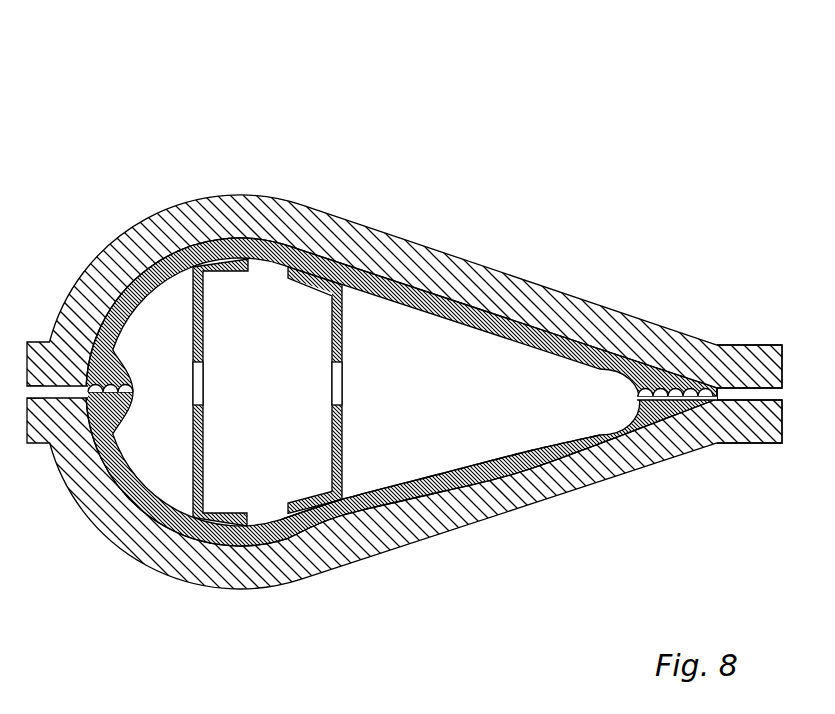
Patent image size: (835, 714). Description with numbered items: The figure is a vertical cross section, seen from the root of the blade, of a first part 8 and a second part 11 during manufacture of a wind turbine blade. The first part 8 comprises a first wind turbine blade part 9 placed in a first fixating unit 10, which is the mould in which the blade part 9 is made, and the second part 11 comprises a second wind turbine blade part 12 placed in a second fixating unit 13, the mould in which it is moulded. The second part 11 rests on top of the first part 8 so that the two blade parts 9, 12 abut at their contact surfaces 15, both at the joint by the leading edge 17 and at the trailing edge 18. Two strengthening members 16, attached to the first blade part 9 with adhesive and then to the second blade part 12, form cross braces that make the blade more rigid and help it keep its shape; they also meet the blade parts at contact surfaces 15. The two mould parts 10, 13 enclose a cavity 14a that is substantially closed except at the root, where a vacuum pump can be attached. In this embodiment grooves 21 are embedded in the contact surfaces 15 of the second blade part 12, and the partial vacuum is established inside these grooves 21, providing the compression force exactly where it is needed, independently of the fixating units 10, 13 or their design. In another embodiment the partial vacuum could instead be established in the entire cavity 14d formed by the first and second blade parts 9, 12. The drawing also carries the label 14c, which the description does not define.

The first part 8 is at (168, 606).
The first wind turbine blade part 9 is at (245, 538).
The first fixating unit 10 is at (337, 498).
The second part 11 is at (168, 172).
The second wind turbine blade part 12 is at (297, 250).
The second fixating unit 13 is at (387, 253).
The cavity 14a is at (430, 377).
The trailing edge slot 14c is at (673, 398).
The cavity 14d is at (497, 423).
The contact surfaces 15 is at (651, 390).
The strengthening members 16 is at (334, 420).
The leading edge 17 is at (54, 446).
The trailing edge 18 is at (750, 437).
The grooves 21 is at (690, 392).